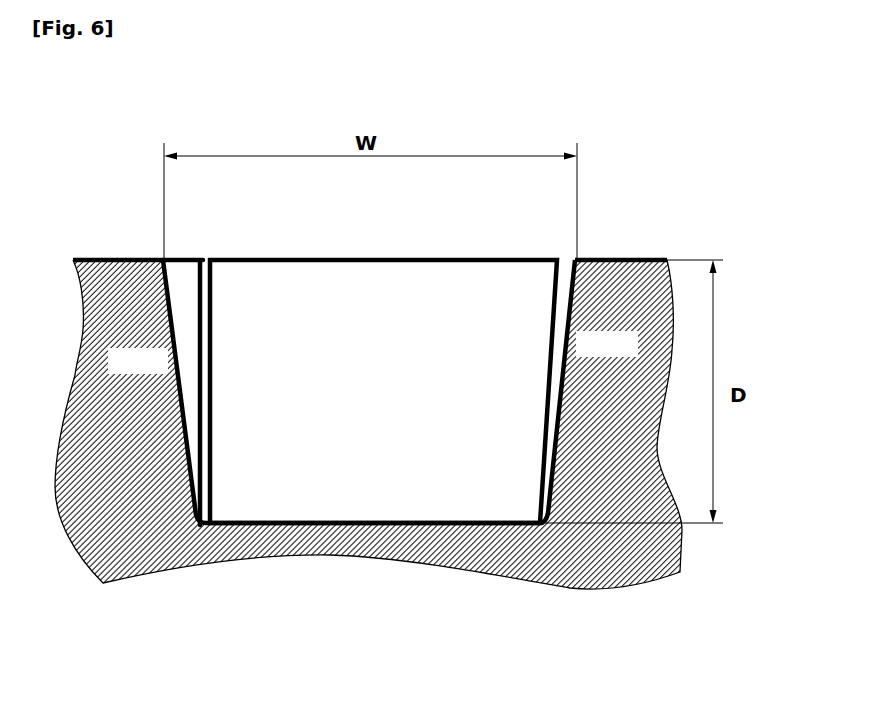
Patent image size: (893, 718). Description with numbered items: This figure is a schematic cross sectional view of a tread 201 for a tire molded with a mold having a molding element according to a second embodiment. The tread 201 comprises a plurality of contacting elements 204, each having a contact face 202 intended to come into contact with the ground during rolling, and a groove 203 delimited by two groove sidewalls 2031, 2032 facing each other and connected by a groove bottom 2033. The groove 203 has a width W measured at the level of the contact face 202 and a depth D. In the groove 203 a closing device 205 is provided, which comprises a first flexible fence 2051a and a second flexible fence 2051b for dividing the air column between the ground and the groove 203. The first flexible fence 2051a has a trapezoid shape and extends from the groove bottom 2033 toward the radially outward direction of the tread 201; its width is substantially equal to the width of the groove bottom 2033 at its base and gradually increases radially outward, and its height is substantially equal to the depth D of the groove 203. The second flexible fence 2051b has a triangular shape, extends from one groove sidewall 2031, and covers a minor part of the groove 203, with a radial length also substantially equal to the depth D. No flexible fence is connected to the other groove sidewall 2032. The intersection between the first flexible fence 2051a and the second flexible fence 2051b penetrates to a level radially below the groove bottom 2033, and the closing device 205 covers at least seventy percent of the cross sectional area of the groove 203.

The tread 201 is at (621, 144).
The contact face 202 is at (120, 258).
The groove 203 is at (330, 258).
The contacting element 204 is at (95, 258).
The closing device 205 is at (430, 245).
The groove sidewall 2031 is at (175, 318).
The groove sidewall 2032 is at (565, 287).
The groove bottom 2033 is at (293, 523).
The first flexible fence 2051a is at (432, 505).
The second flexible fence 2051b is at (185, 275).